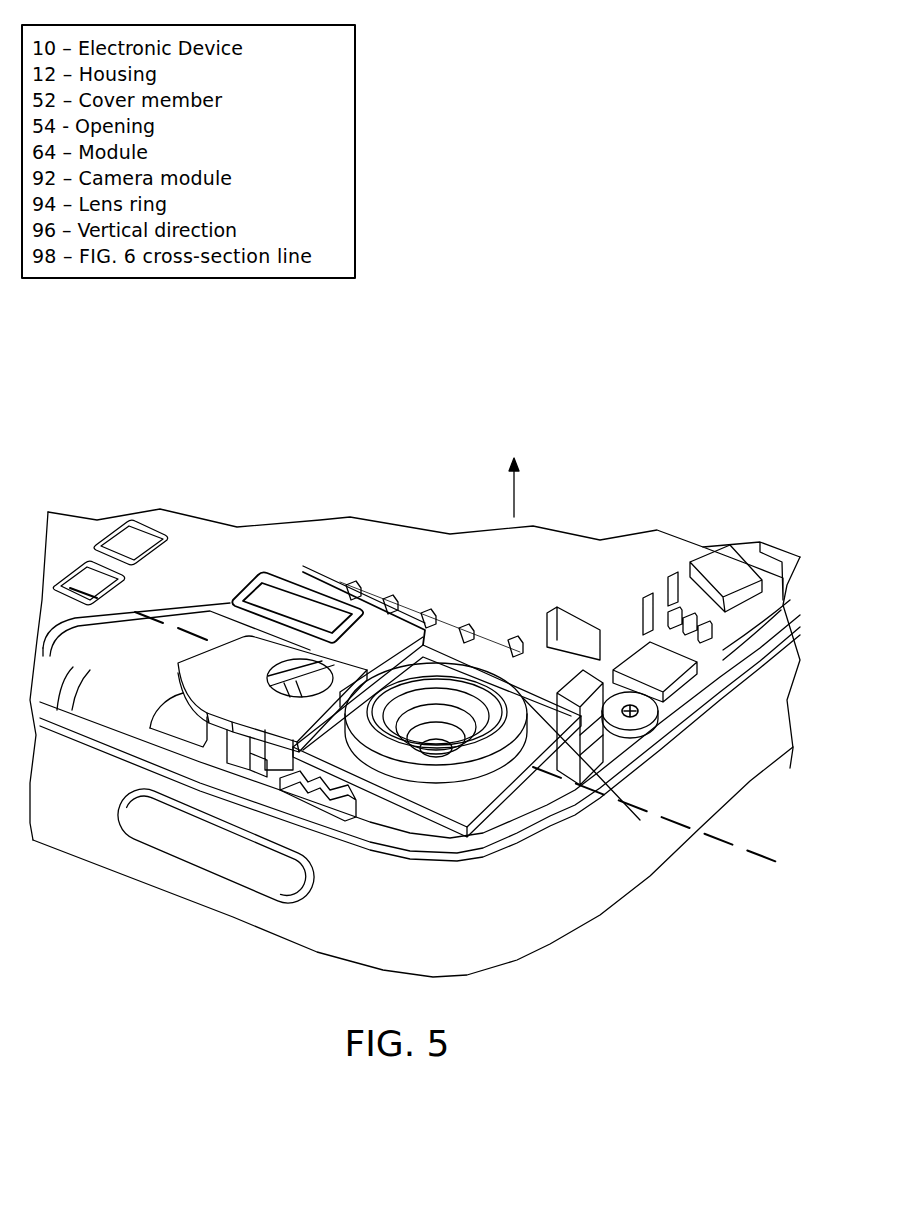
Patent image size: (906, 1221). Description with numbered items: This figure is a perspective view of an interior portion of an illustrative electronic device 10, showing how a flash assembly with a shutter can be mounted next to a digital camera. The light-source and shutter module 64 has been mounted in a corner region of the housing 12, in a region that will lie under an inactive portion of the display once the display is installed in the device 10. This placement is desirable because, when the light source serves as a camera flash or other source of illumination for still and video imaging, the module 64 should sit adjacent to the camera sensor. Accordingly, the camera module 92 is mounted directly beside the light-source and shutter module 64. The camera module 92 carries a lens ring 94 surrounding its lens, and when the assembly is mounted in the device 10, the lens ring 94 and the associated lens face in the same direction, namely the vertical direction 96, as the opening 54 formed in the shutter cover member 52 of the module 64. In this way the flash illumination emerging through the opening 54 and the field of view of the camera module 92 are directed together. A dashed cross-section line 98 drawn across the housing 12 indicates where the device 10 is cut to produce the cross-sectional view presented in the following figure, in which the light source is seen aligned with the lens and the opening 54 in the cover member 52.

The electronic device 10 is at (662, 512).
The housing 12 is at (593, 882).
The shutter cover member 52 is at (260, 653).
The opening 54 is at (307, 660).
The light-source and shutter module 64 is at (190, 720).
The camera module 92 is at (415, 803).
The lens ring 94 is at (472, 770).
The vertical direction 96 is at (514, 490).
The cross-section line 98 is at (90, 594).